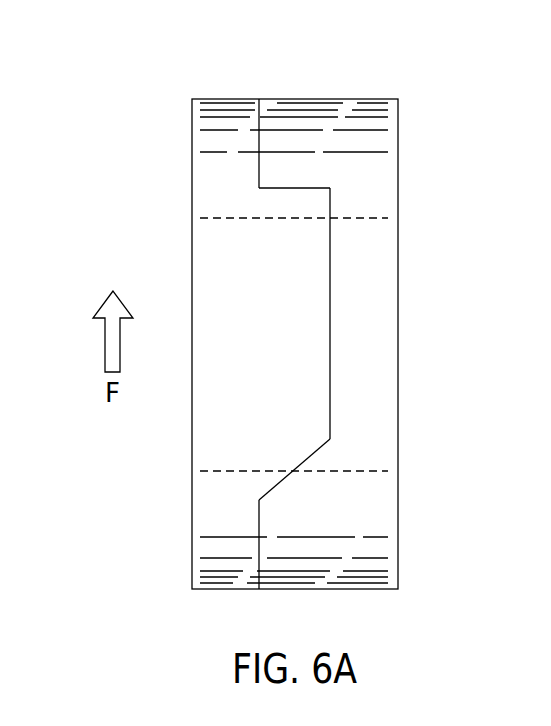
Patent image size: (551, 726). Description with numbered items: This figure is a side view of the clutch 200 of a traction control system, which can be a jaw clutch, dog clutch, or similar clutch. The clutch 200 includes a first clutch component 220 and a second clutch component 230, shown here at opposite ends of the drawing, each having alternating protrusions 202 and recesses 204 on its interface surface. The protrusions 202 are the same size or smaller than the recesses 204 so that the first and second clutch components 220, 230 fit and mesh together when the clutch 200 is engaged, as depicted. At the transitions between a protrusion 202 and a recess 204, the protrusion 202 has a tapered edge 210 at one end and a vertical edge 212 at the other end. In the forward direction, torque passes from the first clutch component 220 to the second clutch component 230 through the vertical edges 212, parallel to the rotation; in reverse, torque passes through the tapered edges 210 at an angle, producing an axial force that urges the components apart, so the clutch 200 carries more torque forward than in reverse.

The clutch 200 is at (162, 43).
The protrusion 202 is at (299, 345).
The recess 204 is at (363, 383).
The tapered edge 210 is at (285, 480).
The vertical edge 212 is at (300, 188).
The first clutch component 220 is at (229, 548).
The second clutch component 230 is at (375, 123).